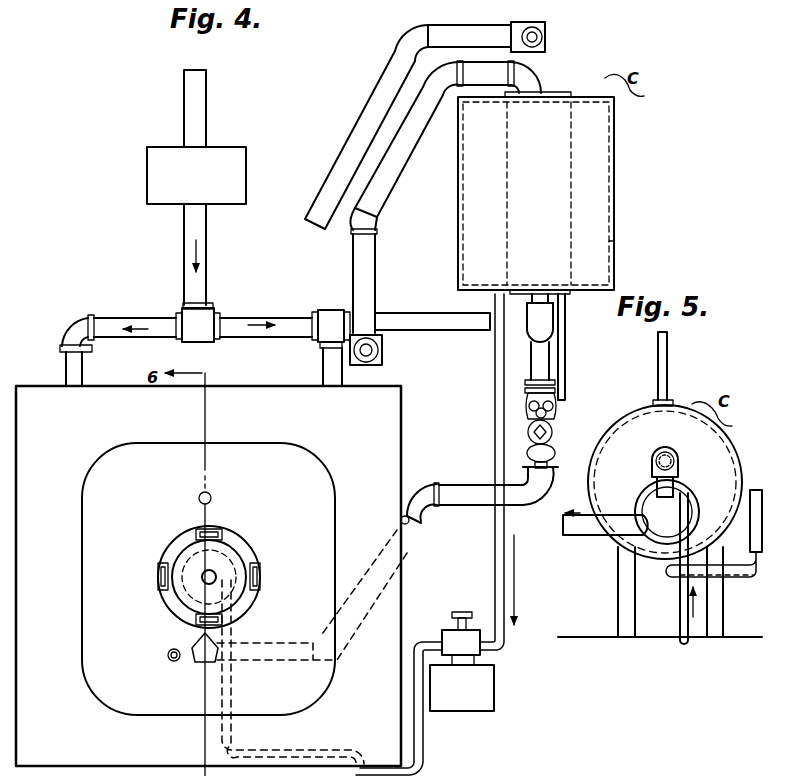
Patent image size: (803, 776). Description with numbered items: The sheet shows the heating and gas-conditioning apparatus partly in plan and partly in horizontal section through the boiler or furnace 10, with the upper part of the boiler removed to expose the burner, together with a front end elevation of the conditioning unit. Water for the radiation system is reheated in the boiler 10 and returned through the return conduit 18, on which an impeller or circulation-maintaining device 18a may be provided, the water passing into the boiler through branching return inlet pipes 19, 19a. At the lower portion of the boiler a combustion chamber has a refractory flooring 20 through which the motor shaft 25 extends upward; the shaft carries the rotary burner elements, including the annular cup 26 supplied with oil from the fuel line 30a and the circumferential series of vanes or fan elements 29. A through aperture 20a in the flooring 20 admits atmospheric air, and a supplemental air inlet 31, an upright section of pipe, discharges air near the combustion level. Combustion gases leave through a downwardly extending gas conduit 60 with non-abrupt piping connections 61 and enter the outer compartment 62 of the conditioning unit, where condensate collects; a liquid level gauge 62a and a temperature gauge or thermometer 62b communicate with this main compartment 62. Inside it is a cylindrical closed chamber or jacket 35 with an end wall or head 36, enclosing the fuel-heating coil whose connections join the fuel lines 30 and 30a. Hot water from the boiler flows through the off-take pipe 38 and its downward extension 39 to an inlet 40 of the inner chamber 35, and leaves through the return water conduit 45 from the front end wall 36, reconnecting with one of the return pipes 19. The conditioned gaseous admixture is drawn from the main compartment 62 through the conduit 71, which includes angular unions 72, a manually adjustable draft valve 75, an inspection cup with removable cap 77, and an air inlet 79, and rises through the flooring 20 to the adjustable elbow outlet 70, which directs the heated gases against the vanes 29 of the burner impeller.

In FIG. 4, the boiler or furnace 10 is at (30, 392).
In FIG. 4, the return conduit 18 is at (186, 84).
In FIG. 4, the impeller or circulation-maintaining device 18a is at (149, 172).
In FIG. 4, the return inlet pipe 19 is at (284, 320).
In FIG. 4, the return inlet pipe 19a is at (117, 322).
In FIG. 4, the combustion chamber flooring 20 is at (100, 617).
In FIG. 4, the through aperture 20a is at (209, 494).
In FIG. 4, the motor shaft 25 is at (203, 565).
In FIG. 4, the annular cup 26 is at (236, 558).
In FIG. 4, the vanes or fan elements 29 is at (214, 530).
In FIG. 4, the supplemental air inlet 31 is at (171, 661).
In FIG. 4, the discharge outlet or directive element 70 is at (203, 663).
In FIG. 4, the conduit 71 is at (533, 370).
In FIG. 5, the conduit 71 is at (655, 482).
In FIG. 4, the connections or unions 72 is at (527, 340).
In FIG. 5, the connections or unions 72 is at (680, 466).
In FIG. 4, the fuel line 30 is at (566, 344).
In FIG. 5, the fuel line 30 is at (681, 612).
In FIG. 4, the fuel line 30a is at (496, 408).
In FIG. 4, the gas conduit 60 is at (366, 106).
In FIG. 4, the piping connections 61 is at (420, 34).
In FIG. 4, the extension 39 is at (388, 188).
In FIG. 4, the inlet 40 is at (541, 90).
In FIG. 4, the closed chamber or jacket 35 is at (570, 190).
In FIG. 4, the outer compartment or main chamber 62 is at (598, 241).
In FIG. 5, the outer compartment or main chamber 62 is at (626, 424).
In FIG. 4, the return water conduit 45 is at (446, 330).
In FIG. 5, the return water conduit 45 is at (594, 536).
In FIG. 4, the off-take conduit or pipe 38 is at (378, 355).
In FIG. 4, the manually adjustable valve 75 is at (553, 432).
In FIG. 4, the removable closure or cap 77 is at (553, 456).
In FIG. 4, the air inlet 79 is at (410, 526).
In FIG. 5, the liquid level gauge 62a is at (750, 514).
In FIG. 5, the temperature gauge or thermometer 62b is at (668, 352).
In FIG. 5, the end wall or head 36 is at (647, 504).